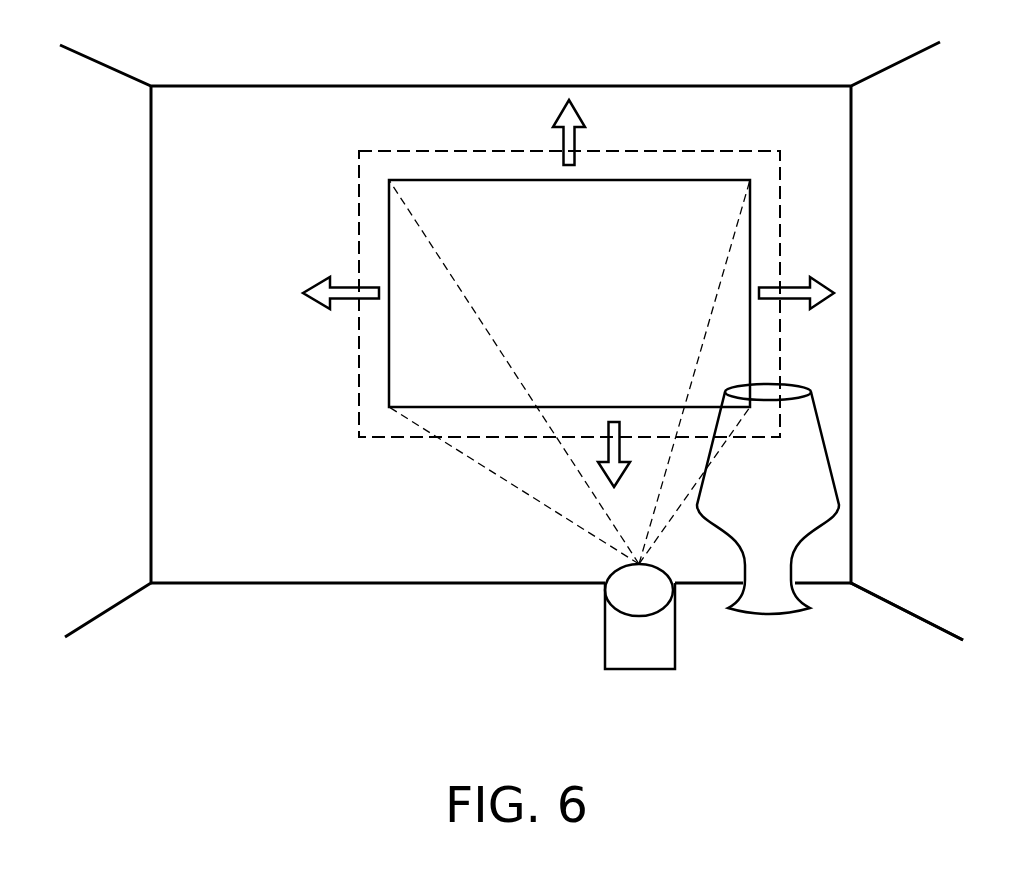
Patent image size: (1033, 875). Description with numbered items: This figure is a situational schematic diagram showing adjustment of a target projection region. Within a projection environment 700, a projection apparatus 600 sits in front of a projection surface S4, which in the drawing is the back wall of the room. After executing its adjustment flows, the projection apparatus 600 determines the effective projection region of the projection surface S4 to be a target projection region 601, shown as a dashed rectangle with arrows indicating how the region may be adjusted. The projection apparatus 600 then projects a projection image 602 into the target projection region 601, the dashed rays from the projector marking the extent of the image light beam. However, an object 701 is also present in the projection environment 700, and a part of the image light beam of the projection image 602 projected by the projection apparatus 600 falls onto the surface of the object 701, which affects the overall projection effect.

The projection surface S4 is at (274, 112).
The projection apparatus 600 is at (638, 657).
The target projection region 601 is at (625, 150).
The projection image 602 is at (700, 180).
The projection environment 700 is at (962, 729).
The object 701 is at (810, 452).